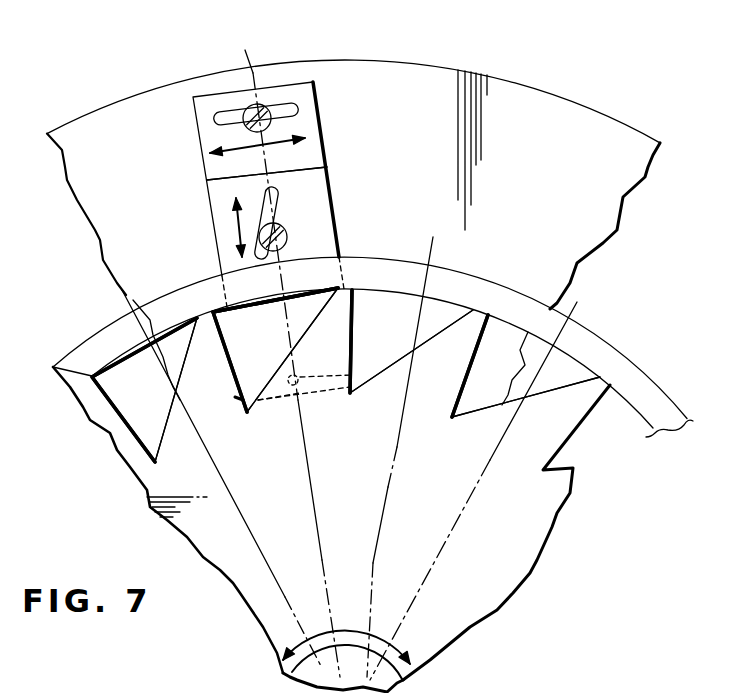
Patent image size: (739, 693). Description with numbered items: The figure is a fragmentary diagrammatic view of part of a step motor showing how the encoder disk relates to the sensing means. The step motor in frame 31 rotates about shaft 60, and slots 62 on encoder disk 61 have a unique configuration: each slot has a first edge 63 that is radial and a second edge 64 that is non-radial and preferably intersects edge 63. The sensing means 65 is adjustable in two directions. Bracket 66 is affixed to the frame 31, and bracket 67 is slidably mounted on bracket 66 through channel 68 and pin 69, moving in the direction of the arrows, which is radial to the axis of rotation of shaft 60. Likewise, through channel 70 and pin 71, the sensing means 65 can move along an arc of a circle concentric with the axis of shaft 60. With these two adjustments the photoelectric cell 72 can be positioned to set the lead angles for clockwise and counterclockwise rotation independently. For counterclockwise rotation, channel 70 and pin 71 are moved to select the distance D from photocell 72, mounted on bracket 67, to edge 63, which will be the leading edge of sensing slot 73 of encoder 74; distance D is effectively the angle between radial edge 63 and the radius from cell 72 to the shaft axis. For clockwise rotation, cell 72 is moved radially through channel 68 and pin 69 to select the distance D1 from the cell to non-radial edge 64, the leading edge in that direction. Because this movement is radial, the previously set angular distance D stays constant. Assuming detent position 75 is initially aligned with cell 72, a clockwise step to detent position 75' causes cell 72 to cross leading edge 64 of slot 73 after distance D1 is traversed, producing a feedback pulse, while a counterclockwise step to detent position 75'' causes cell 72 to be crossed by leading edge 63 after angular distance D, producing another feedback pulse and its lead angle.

The frame 31 is at (435, 67).
The shaft 60 is at (283, 673).
The encoder disk 61 is at (593, 357).
The slots 62 is at (168, 337).
The first edge 63 is at (238, 370).
The second edge 64 is at (190, 353).
The sensing means 65 is at (315, 82).
The bracket 66 is at (322, 123).
The bracket 67 is at (333, 197).
The channel 68 is at (268, 192).
The pin 69 is at (278, 233).
The channel 70 is at (283, 107).
The pin 71 is at (249, 107).
The photoelectric cell 72 is at (297, 392).
The sensing slot 73 is at (250, 312).
The encoder 74 is at (533, 542).
The detent position 75 is at (300, 363).
The detent position 75' is at (222, 479).
The detent position 75'' is at (472, 458).
The distance D is at (330, 378).
The distance D1 is at (280, 390).